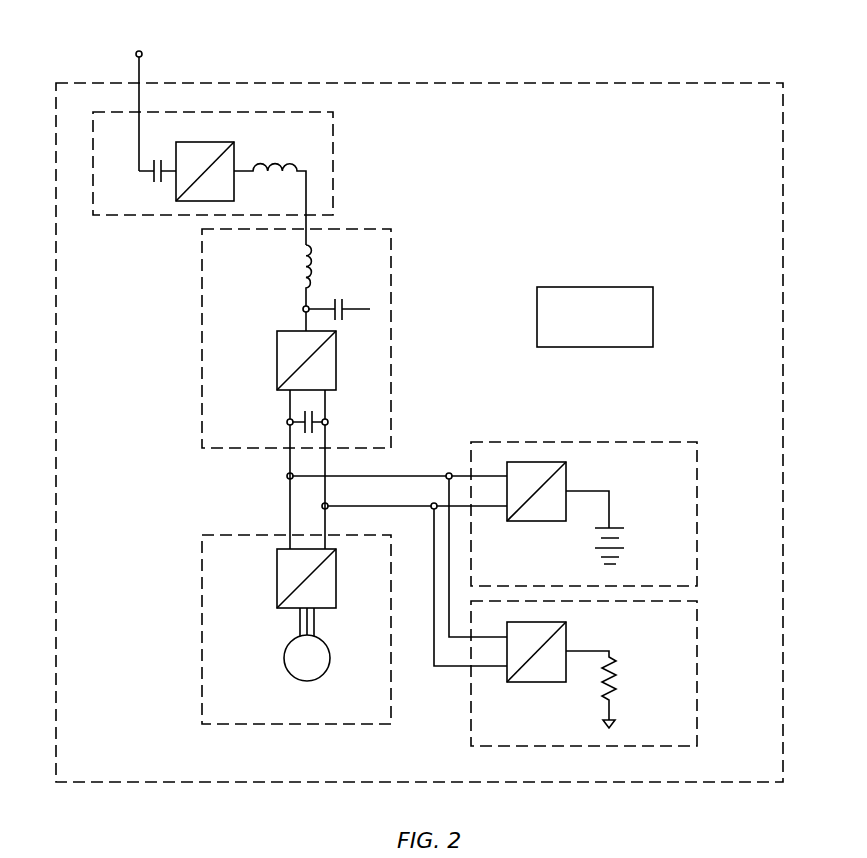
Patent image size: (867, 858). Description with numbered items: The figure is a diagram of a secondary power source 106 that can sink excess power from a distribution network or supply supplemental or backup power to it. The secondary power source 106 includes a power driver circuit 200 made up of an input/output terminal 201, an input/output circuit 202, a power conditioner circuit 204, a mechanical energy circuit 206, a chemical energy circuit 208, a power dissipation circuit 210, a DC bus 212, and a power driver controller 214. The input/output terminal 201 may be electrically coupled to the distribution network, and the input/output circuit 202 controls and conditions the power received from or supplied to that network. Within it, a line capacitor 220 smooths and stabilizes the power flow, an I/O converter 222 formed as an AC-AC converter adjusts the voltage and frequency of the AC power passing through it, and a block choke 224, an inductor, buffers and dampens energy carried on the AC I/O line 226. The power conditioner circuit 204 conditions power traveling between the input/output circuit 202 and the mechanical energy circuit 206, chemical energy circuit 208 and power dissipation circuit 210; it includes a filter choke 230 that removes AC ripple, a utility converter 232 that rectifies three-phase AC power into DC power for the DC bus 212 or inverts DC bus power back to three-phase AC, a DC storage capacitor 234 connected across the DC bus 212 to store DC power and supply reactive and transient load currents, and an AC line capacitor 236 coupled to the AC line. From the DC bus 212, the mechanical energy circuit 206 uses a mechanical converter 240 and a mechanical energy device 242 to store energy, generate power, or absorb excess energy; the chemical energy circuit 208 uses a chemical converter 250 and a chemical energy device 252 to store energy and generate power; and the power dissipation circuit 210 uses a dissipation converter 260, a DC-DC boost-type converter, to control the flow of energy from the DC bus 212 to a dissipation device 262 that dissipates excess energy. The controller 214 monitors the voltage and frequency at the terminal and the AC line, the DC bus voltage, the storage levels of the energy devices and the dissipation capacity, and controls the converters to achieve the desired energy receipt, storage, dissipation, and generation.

The secondary power source 106 is at (656, 82).
The power driver circuit 200 is at (627, 148).
The input/output terminal 201 is at (145, 52).
The input/output circuit 202 is at (336, 141).
The power conditioner circuit 204 is at (395, 258).
The mechanical energy circuit 206 is at (201, 551).
The chemical energy circuit 208 is at (699, 490).
The power dissipation circuit 210 is at (699, 682).
The direct current (DC) bus 212 is at (289, 504).
The power driver controller 214 is at (595, 317).
The line capacitor 220 is at (158, 186).
The I/O converter 222 is at (230, 141).
The block choke 224 is at (269, 161).
The AC I/O line 226 is at (142, 127).
The filter choke 230 is at (297, 272).
The utility converter 232 is at (276, 357).
The DC storage capacitor 234 is at (297, 413).
The AC line capacitor 236 is at (341, 296).
The mechanical converter 240 is at (276, 578).
The mechanical energy device 242 is at (283, 659).
The chemical converter 250 is at (569, 487).
The chemical energy device 252 is at (632, 530).
The dissipation converter 260 is at (569, 648).
The dissipation device 262 is at (626, 668).